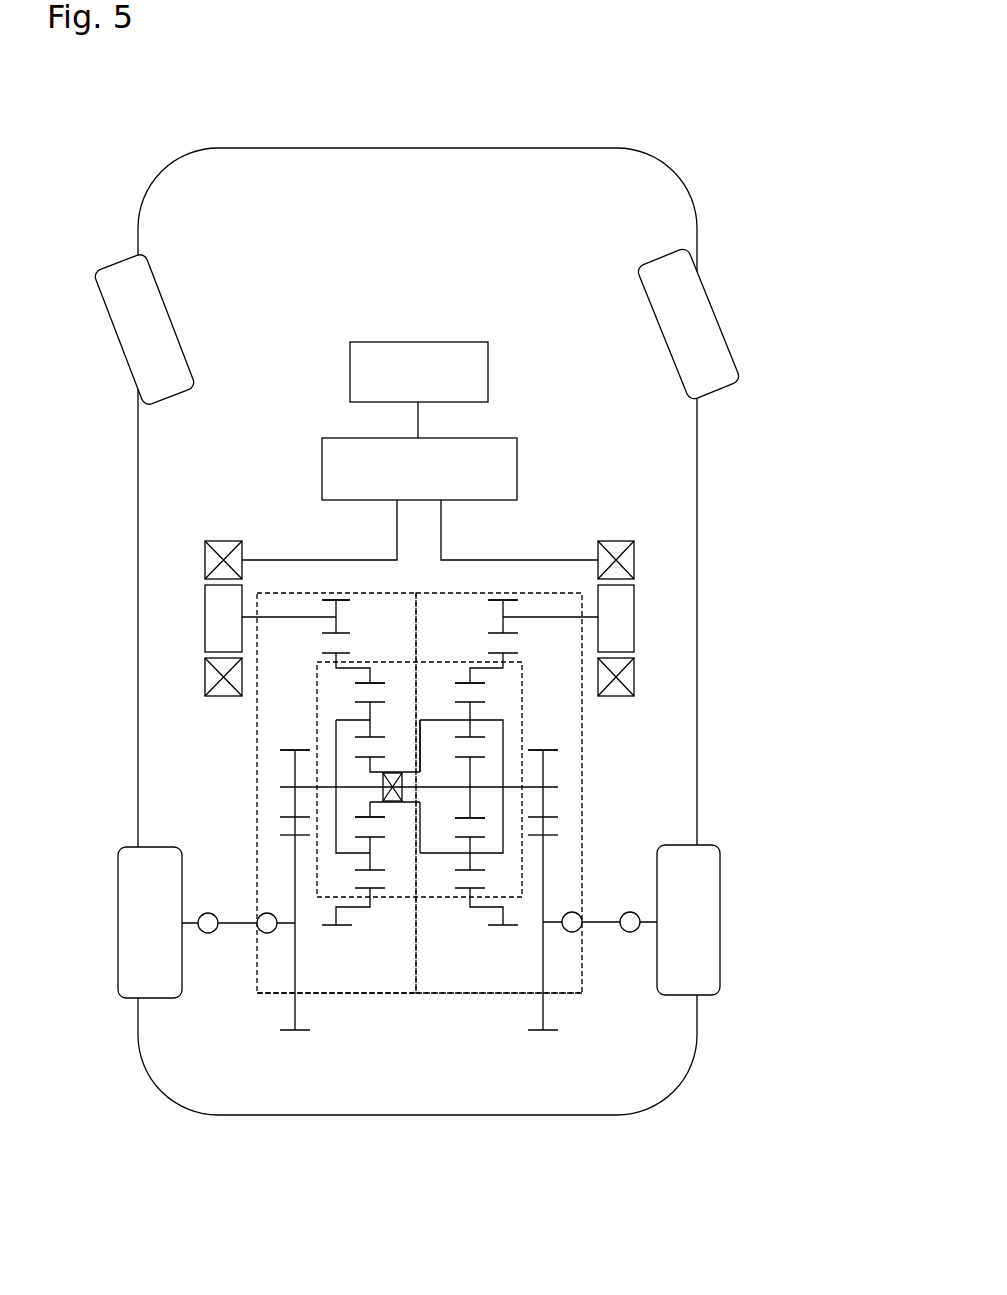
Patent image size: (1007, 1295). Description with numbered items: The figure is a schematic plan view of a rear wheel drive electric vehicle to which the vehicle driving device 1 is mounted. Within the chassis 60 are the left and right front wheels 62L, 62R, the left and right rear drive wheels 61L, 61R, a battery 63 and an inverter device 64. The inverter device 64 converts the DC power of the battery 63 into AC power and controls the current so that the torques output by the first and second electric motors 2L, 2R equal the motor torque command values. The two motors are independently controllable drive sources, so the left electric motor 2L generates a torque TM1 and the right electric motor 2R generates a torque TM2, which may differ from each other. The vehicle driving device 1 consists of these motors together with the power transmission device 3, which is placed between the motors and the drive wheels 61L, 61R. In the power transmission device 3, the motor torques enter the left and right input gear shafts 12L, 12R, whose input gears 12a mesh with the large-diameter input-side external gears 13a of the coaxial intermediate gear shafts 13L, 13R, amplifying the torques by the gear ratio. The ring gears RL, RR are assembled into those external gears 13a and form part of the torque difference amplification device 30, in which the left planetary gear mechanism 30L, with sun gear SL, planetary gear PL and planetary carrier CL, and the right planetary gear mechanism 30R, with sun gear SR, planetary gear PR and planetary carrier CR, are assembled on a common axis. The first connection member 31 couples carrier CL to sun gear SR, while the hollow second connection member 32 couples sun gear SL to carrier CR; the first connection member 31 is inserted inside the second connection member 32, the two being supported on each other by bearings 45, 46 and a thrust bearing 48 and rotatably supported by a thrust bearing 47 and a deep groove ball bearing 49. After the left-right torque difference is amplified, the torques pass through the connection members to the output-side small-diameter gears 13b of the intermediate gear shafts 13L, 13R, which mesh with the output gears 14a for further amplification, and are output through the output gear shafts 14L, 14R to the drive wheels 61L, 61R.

The chassis 60 is at (632, 175).
The front wheel 62L is at (132, 328).
The front wheel 62R is at (707, 323).
The drive wheel 61L is at (132, 890).
The drive wheel 61R is at (705, 885).
The battery 63 is at (484, 370).
The inverter device 64 is at (500, 448).
The vehicle driving device 1 is at (417, 562).
The first electric motor 2L is at (207, 600).
The second electric motor 2R is at (630, 598).
The torque generated by the left electric motor TM1 is at (171, 620).
The torque generated by the right electric motor TM2 is at (667, 616).
The input gear shaft 12L is at (300, 615).
The input gear shaft 12R is at (553, 617).
The input gear 12a is at (345, 598).
The input-side external gear 13a is at (345, 651).
The ring gear RL is at (381, 682).
The ring gear RR is at (454, 682).
The planetary carrier CL is at (353, 782).
The planetary carrier CR is at (468, 782).
The planetary gear PL is at (387, 777).
The planetary gear PR is at (454, 777).
The sun gear SL is at (362, 788).
The sun gear SR is at (476, 788).
The torque difference amplification device 30 is at (447, 900).
The left planetary gear mechanism 30L is at (368, 838).
The right planetary gear mechanism 30R is at (472, 838).
The first connection member 31 is at (348, 792).
The second connection member 32 is at (430, 720).
The intermediate gear shaft 13L is at (292, 783).
The intermediate gear shaft 13R is at (546, 785).
The output-side small-diameter gear 13b is at (287, 748).
The output gear 14a is at (285, 835).
The output gear shaft 14L is at (288, 925).
The output gear shaft 14R is at (552, 925).
The power transmission device 3 is at (428, 995).
The bearing 45 is at (482, 940).
The bearing 46 is at (482, 940).
The thrust bearing 47 is at (482, 940).
The thrust bearing 48 is at (482, 940).
The deep groove ball bearing 49 is at (393, 803).